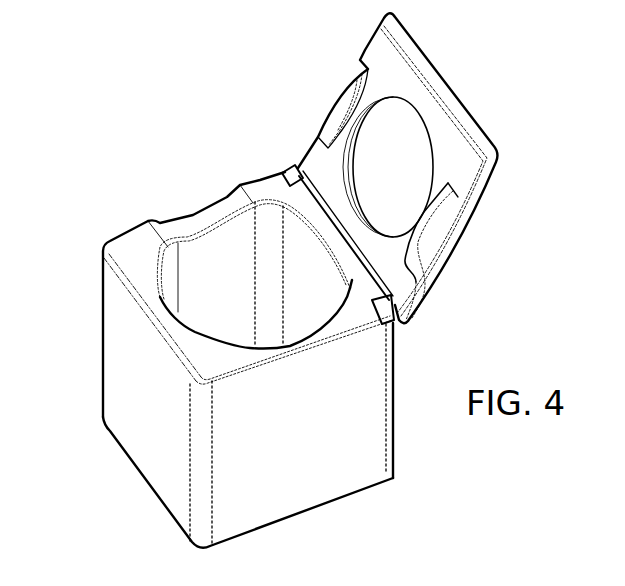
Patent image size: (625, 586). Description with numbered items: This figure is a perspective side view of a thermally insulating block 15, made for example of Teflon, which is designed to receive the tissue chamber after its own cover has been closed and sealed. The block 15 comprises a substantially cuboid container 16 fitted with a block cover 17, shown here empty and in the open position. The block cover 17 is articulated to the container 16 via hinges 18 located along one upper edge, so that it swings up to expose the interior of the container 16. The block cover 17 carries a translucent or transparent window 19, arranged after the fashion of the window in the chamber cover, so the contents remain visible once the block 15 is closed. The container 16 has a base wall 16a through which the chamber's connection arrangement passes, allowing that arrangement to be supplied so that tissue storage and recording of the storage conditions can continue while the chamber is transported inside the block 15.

The thermally insulating block 15 is at (104, 482).
The container 16 is at (403, 434).
The base wall 16a is at (310, 509).
The block cover 17 is at (455, 77).
The hinges 18 is at (292, 166).
The window 19 is at (404, 176).